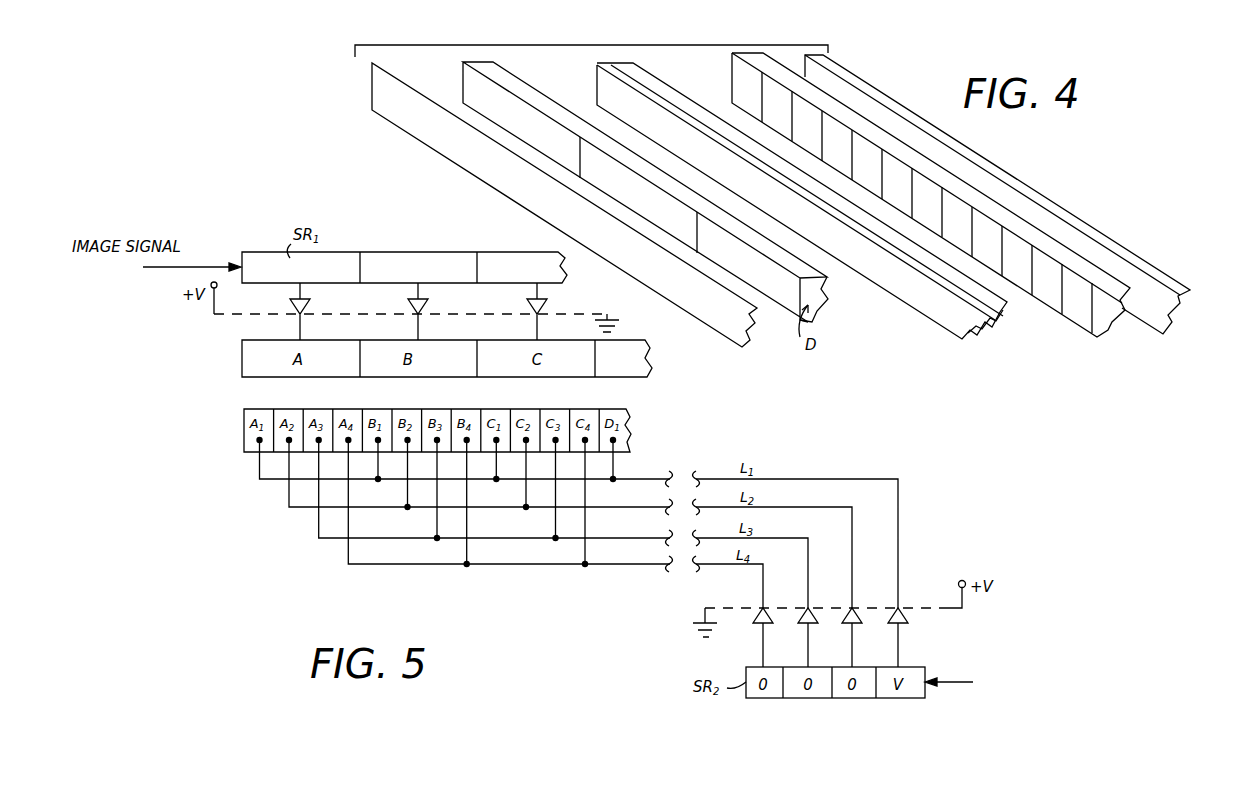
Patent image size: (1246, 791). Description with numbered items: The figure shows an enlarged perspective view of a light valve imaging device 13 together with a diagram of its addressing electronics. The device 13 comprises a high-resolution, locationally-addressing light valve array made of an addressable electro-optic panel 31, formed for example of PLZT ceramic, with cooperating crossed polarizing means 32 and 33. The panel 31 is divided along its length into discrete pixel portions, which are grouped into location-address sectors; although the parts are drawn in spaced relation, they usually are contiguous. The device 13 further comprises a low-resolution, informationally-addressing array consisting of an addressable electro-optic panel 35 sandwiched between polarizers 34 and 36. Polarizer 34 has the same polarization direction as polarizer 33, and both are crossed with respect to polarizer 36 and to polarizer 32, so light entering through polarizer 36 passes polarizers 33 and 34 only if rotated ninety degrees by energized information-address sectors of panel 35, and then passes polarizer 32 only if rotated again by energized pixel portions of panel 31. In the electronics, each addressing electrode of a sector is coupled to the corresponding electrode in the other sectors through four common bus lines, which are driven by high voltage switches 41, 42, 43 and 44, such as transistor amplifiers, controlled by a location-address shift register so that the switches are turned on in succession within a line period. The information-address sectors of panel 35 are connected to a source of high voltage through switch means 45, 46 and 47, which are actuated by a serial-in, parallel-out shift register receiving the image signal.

In FIG. 4, the light valve imaging device 13 is at (607, 45).
In FIG. 4, the addressable electro-optic panel 31 is at (1103, 330).
In FIG. 4, the polarizing means 32 is at (1163, 332).
In FIG. 4, the polarizing means 33 is at (1000, 322).
In FIG. 4, the polarizer 34 is at (962, 338).
In FIG. 4, the addressable electro-optic panel 35 is at (828, 313).
In FIG. 4, the polarizer 36 is at (751, 332).
In FIG. 5, the high voltage switch 41 is at (901, 622).
In FIG. 5, the high voltage switch 42 is at (855, 622).
In FIG. 5, the high voltage switch 43 is at (811, 622).
In FIG. 5, the high voltage switch 44 is at (766, 622).
In FIG. 5, the high voltage switch means 45 is at (312, 304).
In FIG. 5, the high voltage switch means 46 is at (423, 304).
In FIG. 5, the high voltage switch means 47 is at (543, 304).